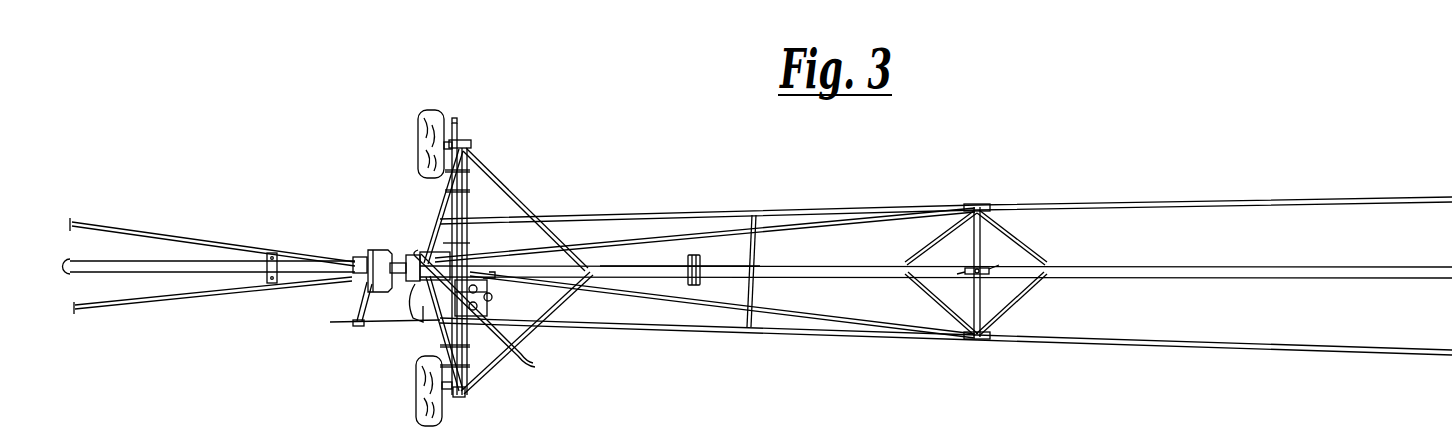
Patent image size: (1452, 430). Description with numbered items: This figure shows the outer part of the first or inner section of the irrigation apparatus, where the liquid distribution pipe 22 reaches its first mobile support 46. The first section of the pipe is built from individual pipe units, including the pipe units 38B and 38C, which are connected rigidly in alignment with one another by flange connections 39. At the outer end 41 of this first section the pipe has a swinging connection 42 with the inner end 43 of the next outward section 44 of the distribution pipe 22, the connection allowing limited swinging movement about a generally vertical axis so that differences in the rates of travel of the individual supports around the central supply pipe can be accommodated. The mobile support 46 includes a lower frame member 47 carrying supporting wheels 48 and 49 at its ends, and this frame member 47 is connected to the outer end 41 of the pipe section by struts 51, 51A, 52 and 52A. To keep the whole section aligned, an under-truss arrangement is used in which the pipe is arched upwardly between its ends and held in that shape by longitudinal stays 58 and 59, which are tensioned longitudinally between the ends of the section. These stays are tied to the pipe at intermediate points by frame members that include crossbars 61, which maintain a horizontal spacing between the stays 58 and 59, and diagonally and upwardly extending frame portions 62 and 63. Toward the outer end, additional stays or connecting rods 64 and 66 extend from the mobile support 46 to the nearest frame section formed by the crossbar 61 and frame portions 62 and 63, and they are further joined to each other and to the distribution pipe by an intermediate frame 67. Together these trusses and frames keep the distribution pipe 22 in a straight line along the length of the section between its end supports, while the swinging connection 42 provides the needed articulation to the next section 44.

The liquid distribution pipe 22 is at (148, 280).
The pipe unit 38B is at (1322, 268).
The pipe unit 38C is at (647, 267).
The flange connection 39 is at (700, 258).
The outer end of the first distribution pipe section 41 is at (474, 263).
The swinging connection 42 is at (387, 240).
The inner end of the next outward section 43 is at (318, 262).
The next outward section of the distribution pipe 44 is at (137, 262).
The mobile support 46 is at (480, 94).
The lower frame member 47 is at (473, 363).
The supporting wheel 48 is at (417, 405).
The supporting wheel 49 is at (420, 134).
The strut 51 is at (436, 337).
The strut 51A is at (442, 204).
The strut 52 is at (490, 367).
The strut 52A is at (468, 164).
The longitudinal stay 58 is at (1200, 343).
The longitudinal stay 59 is at (1215, 202).
The crossbar 61 is at (985, 308).
The diagonally and upwardly extending frame portion 62 is at (931, 297).
The diagonally and upwardly extending frame portion 63 is at (1027, 294).
The stay or connecting rod 64 is at (650, 332).
The stay or connecting rod 66 is at (800, 212).
The intermediate frame 67 is at (757, 253).